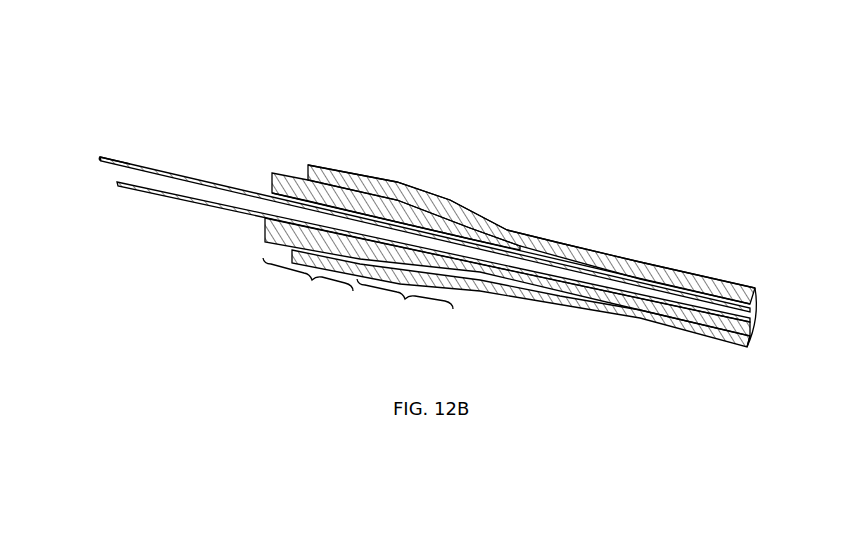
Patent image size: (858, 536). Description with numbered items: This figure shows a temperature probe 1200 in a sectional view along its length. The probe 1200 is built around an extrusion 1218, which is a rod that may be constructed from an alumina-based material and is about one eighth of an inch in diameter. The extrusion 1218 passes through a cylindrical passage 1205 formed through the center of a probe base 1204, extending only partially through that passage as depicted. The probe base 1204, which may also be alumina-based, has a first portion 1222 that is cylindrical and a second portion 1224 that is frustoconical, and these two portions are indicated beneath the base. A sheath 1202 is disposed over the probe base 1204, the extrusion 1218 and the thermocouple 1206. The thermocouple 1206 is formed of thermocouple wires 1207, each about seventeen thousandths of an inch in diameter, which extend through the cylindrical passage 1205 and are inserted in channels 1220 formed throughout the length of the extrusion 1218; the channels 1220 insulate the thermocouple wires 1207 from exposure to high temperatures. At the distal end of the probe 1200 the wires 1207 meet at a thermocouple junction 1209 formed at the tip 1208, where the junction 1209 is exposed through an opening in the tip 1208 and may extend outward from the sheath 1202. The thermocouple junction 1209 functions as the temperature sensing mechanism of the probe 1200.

The temperature probe 1200 is at (192, 58).
The sheath 1202 is at (398, 179).
The probe base 1204 is at (320, 196).
The cylindrical passage 1205 is at (290, 210).
The thermocouple 1206 is at (115, 153).
The thermocouple wires 1207 is at (177, 182).
The tip 1208 is at (759, 334).
The thermocouple junction 1209 is at (757, 313).
The extrusion 1218 is at (647, 297).
The channels 1220 is at (528, 246).
The first portion 1222 is at (308, 281).
The second portion 1224 is at (405, 302).